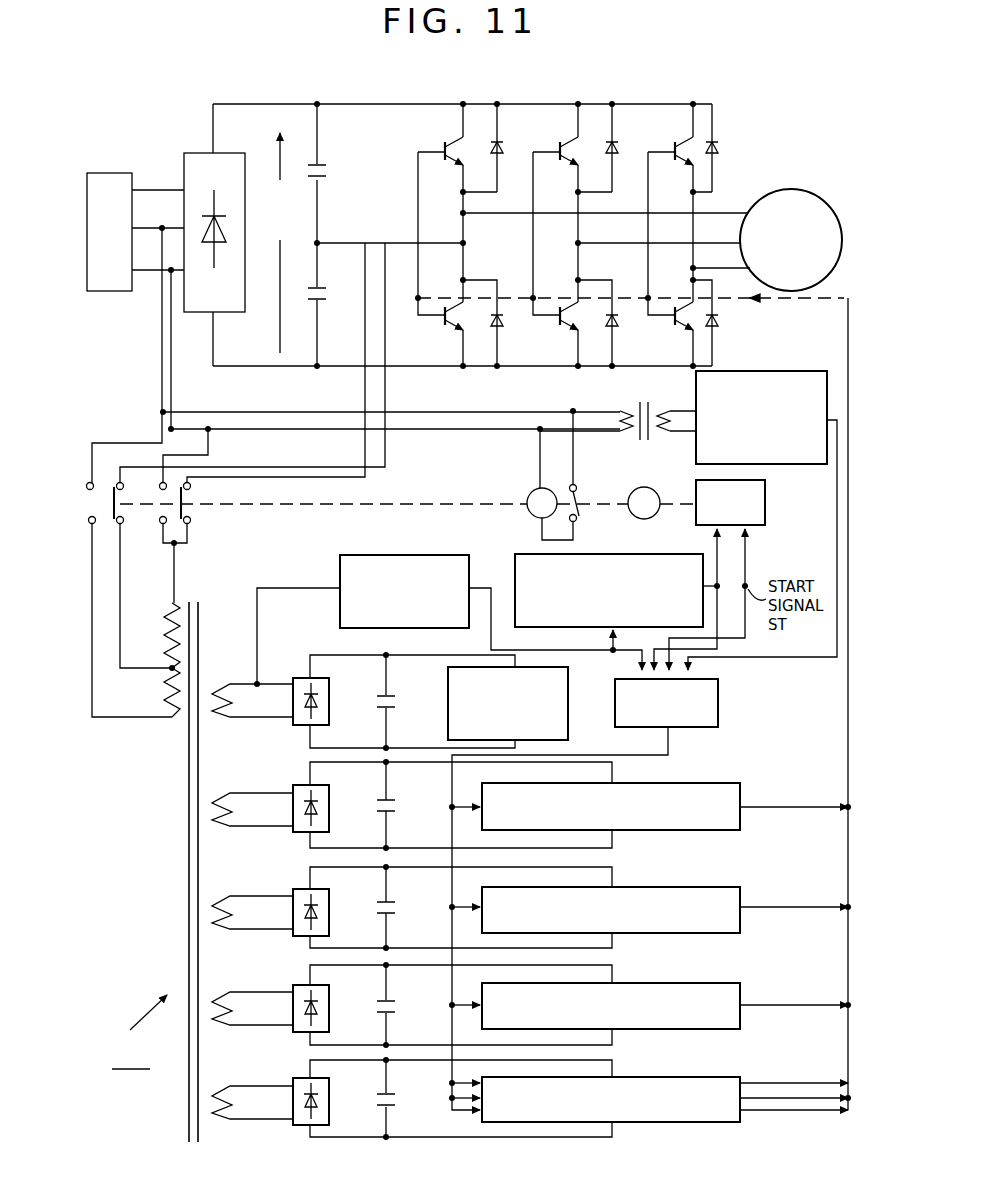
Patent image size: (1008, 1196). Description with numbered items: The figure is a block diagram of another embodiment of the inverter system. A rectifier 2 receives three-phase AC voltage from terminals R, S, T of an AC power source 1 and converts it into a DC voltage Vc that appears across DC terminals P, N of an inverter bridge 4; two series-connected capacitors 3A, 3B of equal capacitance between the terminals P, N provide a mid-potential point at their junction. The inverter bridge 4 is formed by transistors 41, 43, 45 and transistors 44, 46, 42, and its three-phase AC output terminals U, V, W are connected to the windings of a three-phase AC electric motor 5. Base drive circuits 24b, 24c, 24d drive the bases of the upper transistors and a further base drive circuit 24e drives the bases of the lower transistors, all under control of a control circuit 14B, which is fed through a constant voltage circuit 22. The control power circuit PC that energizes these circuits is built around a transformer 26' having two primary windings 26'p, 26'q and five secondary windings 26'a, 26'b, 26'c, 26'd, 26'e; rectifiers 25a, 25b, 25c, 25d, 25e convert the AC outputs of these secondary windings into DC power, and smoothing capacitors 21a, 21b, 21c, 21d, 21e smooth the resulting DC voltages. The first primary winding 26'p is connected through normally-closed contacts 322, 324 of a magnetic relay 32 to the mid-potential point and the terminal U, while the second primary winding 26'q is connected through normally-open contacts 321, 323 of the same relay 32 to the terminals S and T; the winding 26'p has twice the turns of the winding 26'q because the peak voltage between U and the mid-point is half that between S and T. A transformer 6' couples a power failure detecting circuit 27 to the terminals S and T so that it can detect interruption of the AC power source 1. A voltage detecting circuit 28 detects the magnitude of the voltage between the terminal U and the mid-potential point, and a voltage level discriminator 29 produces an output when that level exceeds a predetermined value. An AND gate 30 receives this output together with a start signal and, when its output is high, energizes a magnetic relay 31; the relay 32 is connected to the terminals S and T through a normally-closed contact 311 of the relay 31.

The AC power source 1 is at (112, 172).
The rectifier 2 is at (197, 153).
The capacitor 3A is at (328, 176).
The capacitor 3B is at (320, 243).
The inverter bridge 4 is at (595, 209).
The three-phase AC electric motor 5 is at (787, 190).
The transformer 6' is at (618, 405).
The control circuit 14B is at (719, 703).
The smoothing capacitor 21a is at (392, 704).
The smoothing capacitor 21b is at (392, 811).
The smoothing capacitor 21c is at (392, 913).
The smoothing capacitor 21d is at (392, 1012).
The smoothing capacitor 21e is at (392, 1106).
The constant voltage circuit 22 is at (447, 728).
The base drive circuit 24b is at (742, 797).
The base drive circuit 24c is at (742, 899).
The base drive circuit 24d is at (742, 995).
The base drive circuit 24e is at (744, 1088).
The rectifier 25a is at (329, 709).
The rectifier 25b is at (329, 816).
The rectifier 25c is at (329, 919).
The rectifier 25d is at (329, 1016).
The rectifier 25e is at (329, 1110).
The transformer 26' is at (157, 872).
The first primary winding 26'p is at (208, 635).
The second primary winding 26'q is at (139, 693).
The secondary winding 26'a is at (252, 721).
The secondary winding 26'b is at (252, 829).
The secondary winding 26'c is at (252, 931).
The secondary winding 26'd is at (252, 1027).
The secondary winding 26'e is at (252, 1121).
The power failure detecting circuit 27 is at (760, 370).
The voltage detecting circuit 28 is at (396, 555).
The voltage level discriminator 29 is at (520, 554).
The AND gate 30 is at (766, 503).
The magnetic relay 31 is at (645, 519).
The magnetic relay 32 is at (529, 494).
The normally-closed contact 311 is at (580, 512).
The normally-open contact 321 is at (95, 500).
The normally-closed contact 322 is at (130, 512).
The normally-open contact 323 is at (168, 505).
The normally-closed contact 324 is at (192, 497).
The transistor 41 is at (444, 150).
The transistor 42 is at (690, 298).
The transistor 43 is at (560, 150).
The transistor 44 is at (415, 305).
The transistor 45 is at (674, 150).
The transistor 46 is at (572, 300).
The DC terminal P is at (412, 103).
The DC terminal N is at (408, 370).
The DC voltage Vc is at (276, 243).
The terminal R is at (158, 180).
The terminal S is at (158, 219).
The terminal T is at (158, 260).
The AC output terminal U is at (604, 204).
The AC output terminal V is at (658, 234).
The AC output terminal W is at (720, 260).
The control power circuit PC is at (139, 1032).